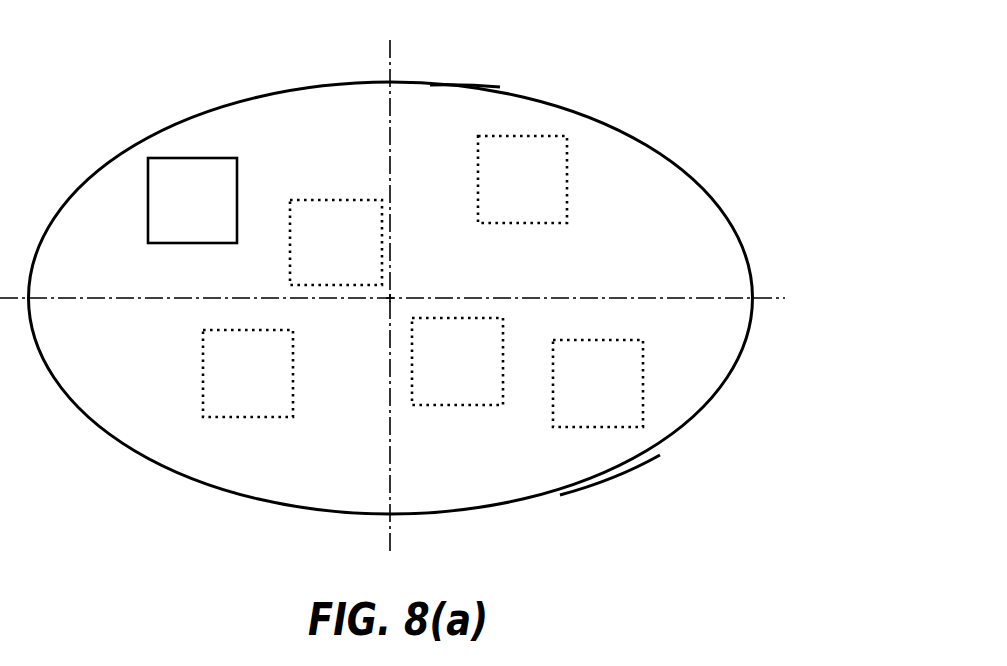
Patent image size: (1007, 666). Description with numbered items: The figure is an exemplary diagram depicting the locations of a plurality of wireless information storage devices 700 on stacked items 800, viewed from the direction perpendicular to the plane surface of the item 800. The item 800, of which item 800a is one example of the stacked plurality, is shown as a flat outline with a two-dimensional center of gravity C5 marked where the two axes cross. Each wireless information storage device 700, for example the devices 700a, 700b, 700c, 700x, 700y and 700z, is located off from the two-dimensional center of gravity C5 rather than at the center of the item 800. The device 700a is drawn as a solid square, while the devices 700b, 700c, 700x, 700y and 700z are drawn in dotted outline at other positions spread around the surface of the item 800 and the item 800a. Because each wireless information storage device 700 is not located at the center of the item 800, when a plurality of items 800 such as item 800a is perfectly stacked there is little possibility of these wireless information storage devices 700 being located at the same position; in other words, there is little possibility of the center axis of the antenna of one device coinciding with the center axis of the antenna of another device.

The wireless information storage device 700 is at (464, 74).
The wireless information storage device 700a is at (153, 197).
The wireless information storage device 700b is at (335, 210).
The wireless information storage device 700c is at (525, 213).
The wireless information storage device 700x is at (638, 357).
The wireless information storage device 700y is at (467, 398).
The wireless information storage device 700z is at (247, 408).
The item 800 is at (598, 496).
The item 800a is at (617, 447).
The two-dimensional center of gravity C5 is at (384, 303).